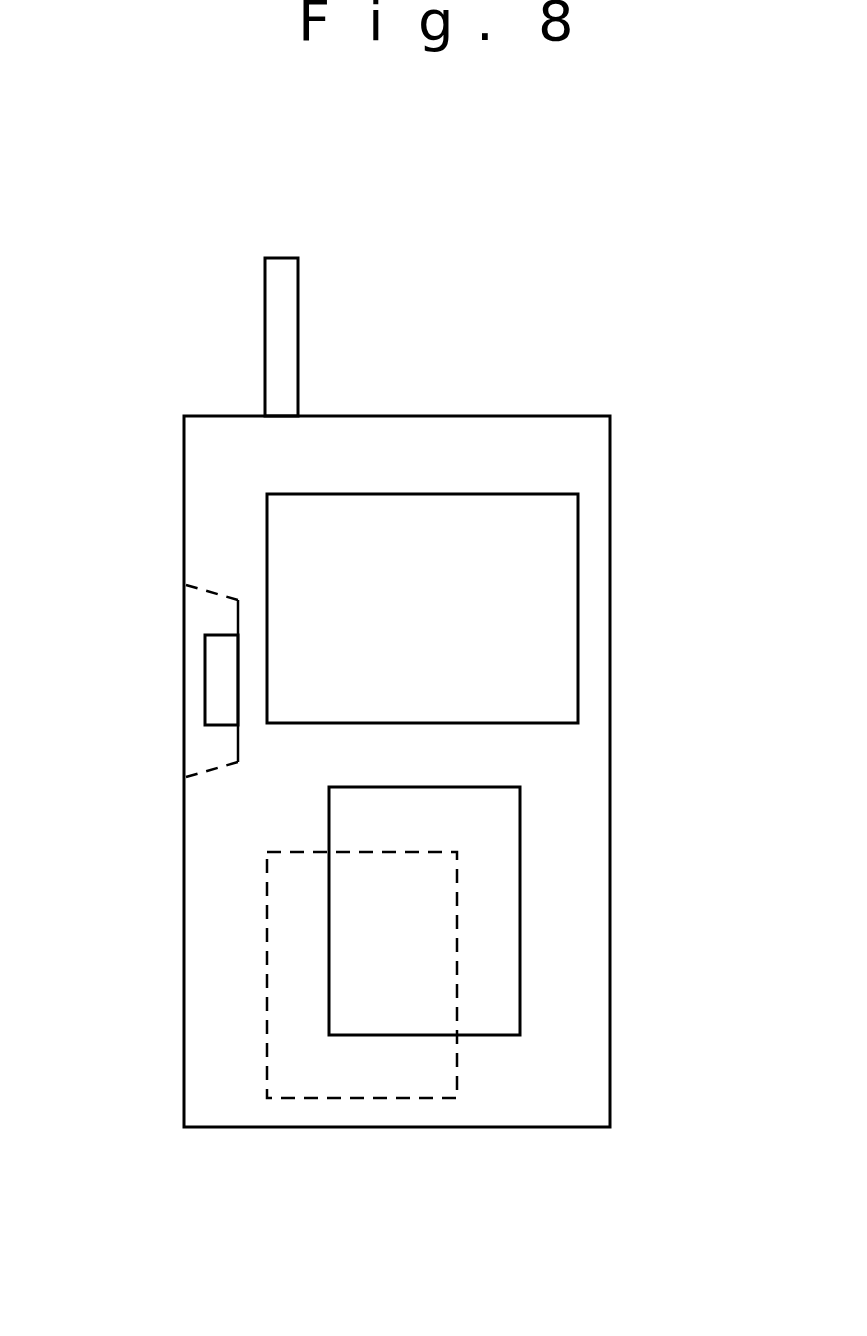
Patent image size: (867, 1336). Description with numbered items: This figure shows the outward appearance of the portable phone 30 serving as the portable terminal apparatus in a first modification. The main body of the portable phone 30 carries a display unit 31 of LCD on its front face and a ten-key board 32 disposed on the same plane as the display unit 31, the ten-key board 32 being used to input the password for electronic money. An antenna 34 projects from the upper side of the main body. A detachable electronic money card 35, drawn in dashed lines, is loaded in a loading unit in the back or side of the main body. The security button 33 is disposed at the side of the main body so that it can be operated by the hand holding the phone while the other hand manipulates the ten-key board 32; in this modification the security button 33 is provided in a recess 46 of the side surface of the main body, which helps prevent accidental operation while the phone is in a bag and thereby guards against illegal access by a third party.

The portable phone 30 is at (530, 416).
The display unit 31 is at (610, 595).
The ten-key board 32 is at (520, 833).
The security button 33 is at (205, 675).
The antenna 34 is at (265, 333).
The electronic money card 35 is at (378, 1098).
The side key region 46 is at (208, 744).